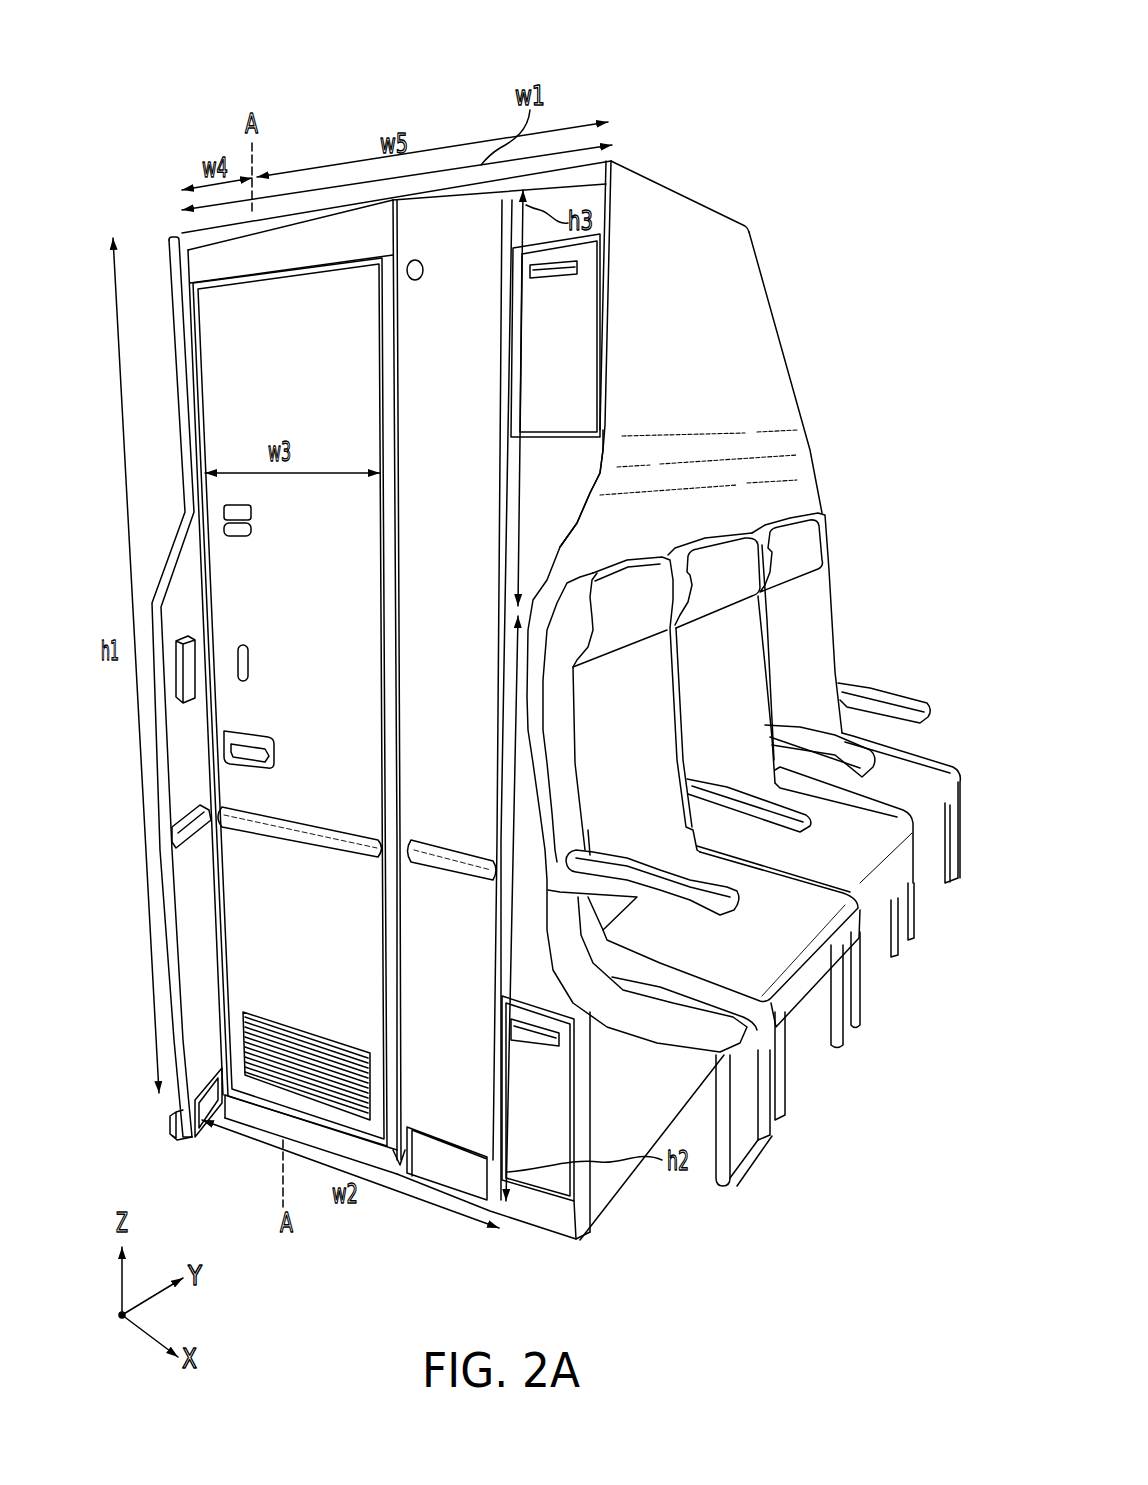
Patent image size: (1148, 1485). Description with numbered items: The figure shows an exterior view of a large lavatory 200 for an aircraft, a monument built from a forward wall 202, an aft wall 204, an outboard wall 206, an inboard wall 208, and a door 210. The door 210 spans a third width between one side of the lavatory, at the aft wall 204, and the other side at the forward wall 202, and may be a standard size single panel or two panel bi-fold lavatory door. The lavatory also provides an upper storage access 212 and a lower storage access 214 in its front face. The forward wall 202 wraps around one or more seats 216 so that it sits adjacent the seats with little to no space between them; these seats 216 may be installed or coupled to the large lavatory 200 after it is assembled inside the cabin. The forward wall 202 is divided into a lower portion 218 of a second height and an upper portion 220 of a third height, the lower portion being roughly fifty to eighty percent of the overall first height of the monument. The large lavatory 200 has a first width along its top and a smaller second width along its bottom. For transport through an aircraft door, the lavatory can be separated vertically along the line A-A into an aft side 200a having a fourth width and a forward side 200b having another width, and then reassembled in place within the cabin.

The large lavatory 200 is at (325, 110).
The aft side 200a is at (167, 217).
The forward side 200b is at (647, 173).
The forward wall 202 is at (795, 307).
The aft wall 204 is at (177, 326).
The outboard wall 206 is at (760, 262).
The inboard wall 208 is at (446, 627).
The door 210 is at (225, 396).
The upper storage access 212 is at (530, 347).
The lower storage access 214 is at (517, 1070).
The seats 216 is at (860, 643).
The lower portion 218 is at (605, 1192).
The upper portion 220 is at (762, 370).